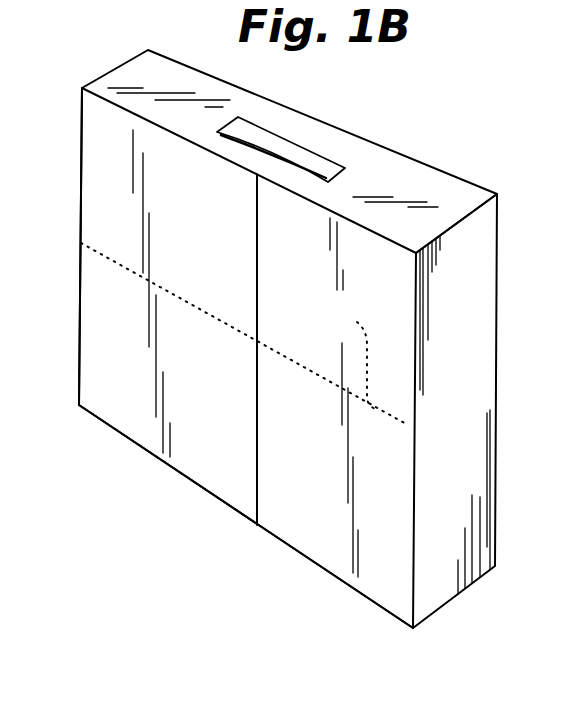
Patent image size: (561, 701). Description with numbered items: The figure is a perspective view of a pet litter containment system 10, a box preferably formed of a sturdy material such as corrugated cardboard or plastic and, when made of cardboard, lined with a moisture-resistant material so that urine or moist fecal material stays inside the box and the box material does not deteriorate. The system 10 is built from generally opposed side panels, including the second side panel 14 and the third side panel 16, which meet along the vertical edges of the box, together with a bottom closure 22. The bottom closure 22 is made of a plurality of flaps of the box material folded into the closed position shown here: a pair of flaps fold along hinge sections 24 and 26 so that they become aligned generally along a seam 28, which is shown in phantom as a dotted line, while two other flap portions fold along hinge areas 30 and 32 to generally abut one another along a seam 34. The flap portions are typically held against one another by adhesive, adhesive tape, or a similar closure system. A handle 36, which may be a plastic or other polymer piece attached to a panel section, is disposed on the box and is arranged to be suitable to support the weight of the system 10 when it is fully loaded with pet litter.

The pet litter containment system 10 is at (497, 149).
The second side panel 14 is at (9, 20).
The third side panel 16 is at (458, 463).
The bottom closure 22 is at (114, 338).
The hinge section 24 is at (277, 540).
The hinge section 26 is at (343, 212).
The seam 28 is at (244, 334).
The hinge area 30 is at (417, 308).
The hinge area 32 is at (80, 198).
The seam 34 is at (258, 279).
The handle 36 is at (277, 131).